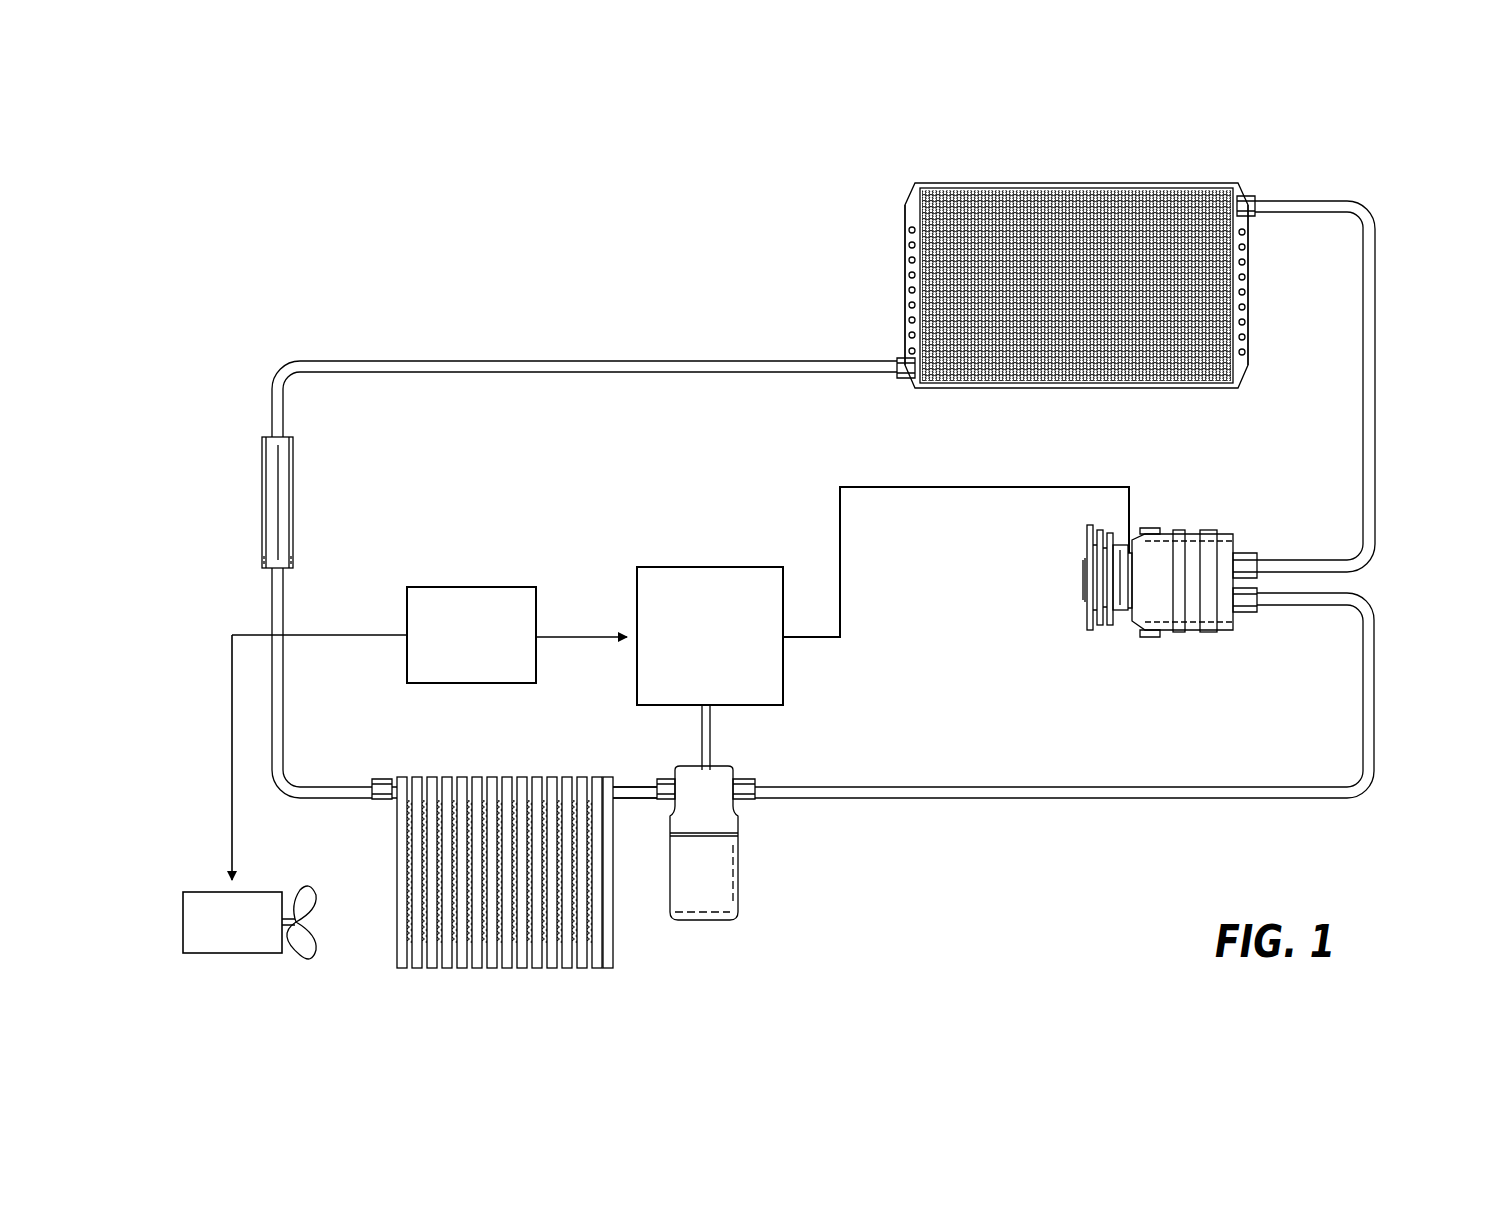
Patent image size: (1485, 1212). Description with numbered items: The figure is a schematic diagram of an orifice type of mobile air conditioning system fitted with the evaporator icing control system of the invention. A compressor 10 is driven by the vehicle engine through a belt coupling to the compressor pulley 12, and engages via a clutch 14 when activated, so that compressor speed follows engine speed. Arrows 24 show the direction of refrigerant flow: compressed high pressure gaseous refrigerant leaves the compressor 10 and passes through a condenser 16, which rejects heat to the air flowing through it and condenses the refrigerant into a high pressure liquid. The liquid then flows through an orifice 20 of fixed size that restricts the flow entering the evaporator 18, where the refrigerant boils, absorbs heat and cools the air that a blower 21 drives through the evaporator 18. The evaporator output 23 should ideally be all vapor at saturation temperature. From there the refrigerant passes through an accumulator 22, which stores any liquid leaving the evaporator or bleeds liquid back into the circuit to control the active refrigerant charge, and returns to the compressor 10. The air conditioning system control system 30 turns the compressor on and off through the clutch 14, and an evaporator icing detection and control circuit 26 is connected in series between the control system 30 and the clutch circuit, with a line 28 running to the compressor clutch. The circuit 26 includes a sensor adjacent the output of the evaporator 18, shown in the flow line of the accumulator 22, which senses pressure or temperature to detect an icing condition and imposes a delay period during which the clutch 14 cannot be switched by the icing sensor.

The compressor 10 is at (1160, 633).
The compressor pulley 12 is at (1095, 630).
The clutch 14 is at (1130, 620).
The condenser 16 is at (1022, 185).
The evaporator 18 is at (446, 777).
The orifice 20 is at (294, 503).
The blower 21 is at (253, 892).
The accumulator 22 is at (741, 863).
The evaporator output 23 is at (633, 785).
The arrows 24 is at (545, 333).
The evaporator icing detection and control circuit 26 is at (729, 567).
The control line to compressor clutch 28 is at (896, 486).
The air conditioning system control system 30 is at (483, 587).